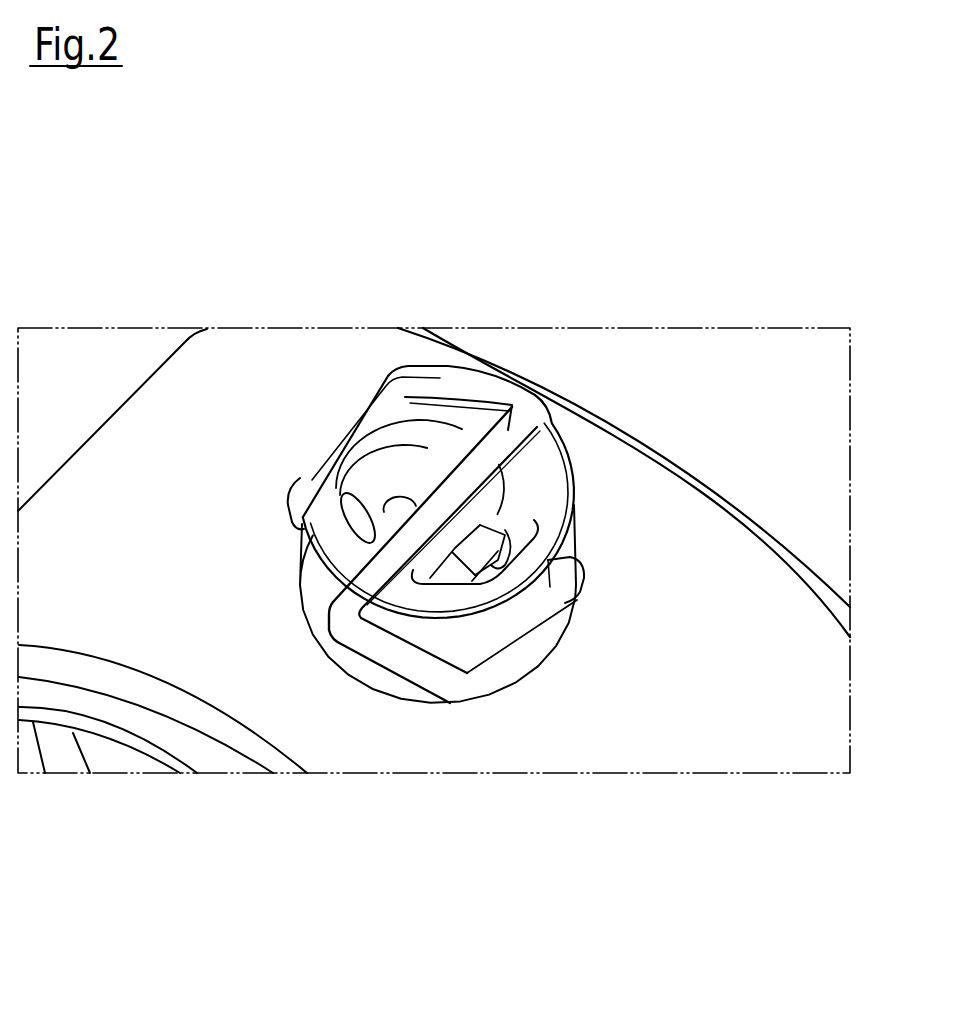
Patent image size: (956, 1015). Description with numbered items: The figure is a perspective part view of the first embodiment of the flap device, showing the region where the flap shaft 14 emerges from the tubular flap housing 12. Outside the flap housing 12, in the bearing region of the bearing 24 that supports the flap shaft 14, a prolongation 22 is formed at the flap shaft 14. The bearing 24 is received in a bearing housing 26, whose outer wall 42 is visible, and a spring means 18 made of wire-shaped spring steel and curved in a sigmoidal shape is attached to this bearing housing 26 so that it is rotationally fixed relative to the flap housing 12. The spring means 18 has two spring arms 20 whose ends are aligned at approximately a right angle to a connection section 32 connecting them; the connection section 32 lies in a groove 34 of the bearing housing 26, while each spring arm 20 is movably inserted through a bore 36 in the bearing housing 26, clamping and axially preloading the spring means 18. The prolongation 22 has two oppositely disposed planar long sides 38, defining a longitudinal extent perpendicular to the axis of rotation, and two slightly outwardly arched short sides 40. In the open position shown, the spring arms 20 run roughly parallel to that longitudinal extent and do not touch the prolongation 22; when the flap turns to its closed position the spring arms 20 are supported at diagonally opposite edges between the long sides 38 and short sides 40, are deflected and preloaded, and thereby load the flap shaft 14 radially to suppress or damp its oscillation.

The flap housing 12 is at (718, 540).
The flap shaft 14 is at (433, 573).
The spring means 18 is at (531, 410).
The spring arm 20 is at (357, 530).
The prolongation 22 is at (407, 497).
The bearing 24 is at (510, 550).
The bearing housing 26 is at (330, 636).
The connection section 32 is at (510, 428).
The groove 34 is at (507, 527).
The bore 36 is at (347, 485).
The long side 38 is at (462, 570).
The short side 40 is at (488, 566).
The outer wall 42 is at (312, 593).